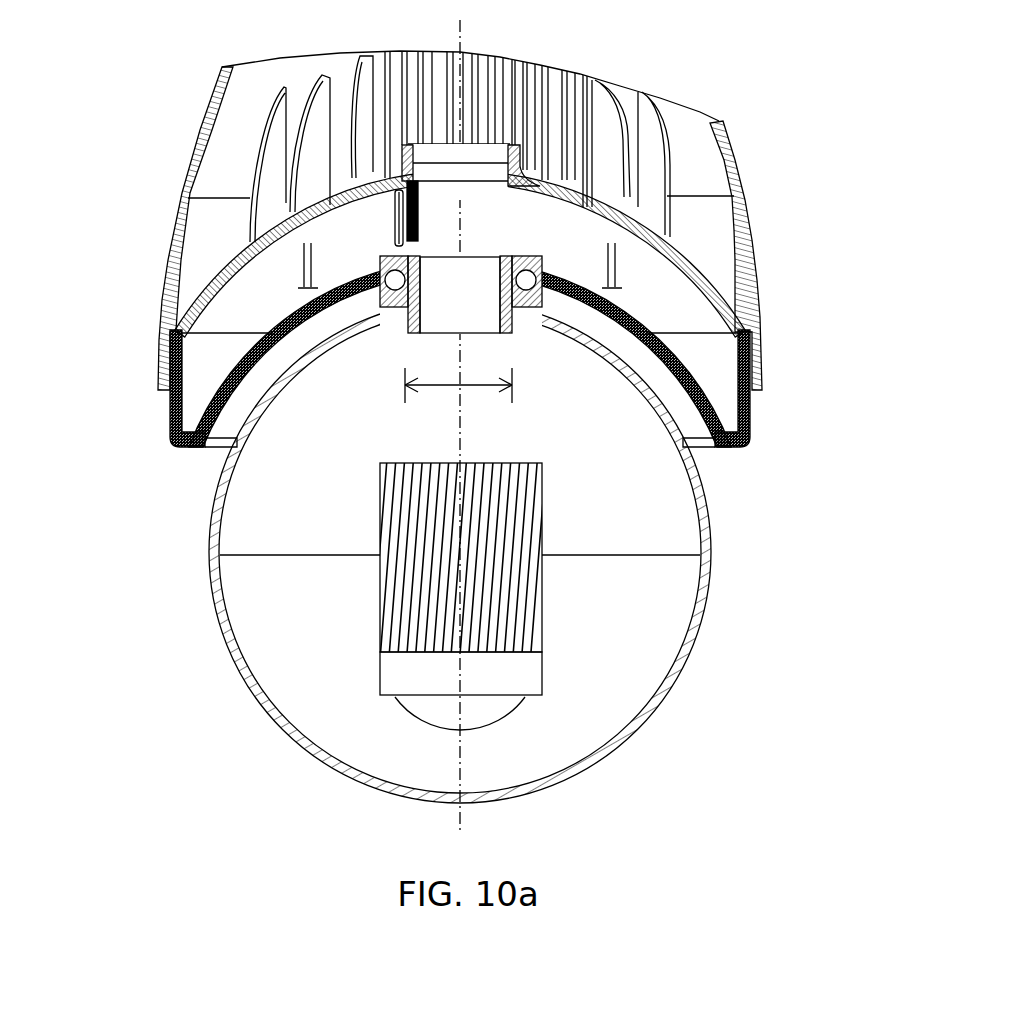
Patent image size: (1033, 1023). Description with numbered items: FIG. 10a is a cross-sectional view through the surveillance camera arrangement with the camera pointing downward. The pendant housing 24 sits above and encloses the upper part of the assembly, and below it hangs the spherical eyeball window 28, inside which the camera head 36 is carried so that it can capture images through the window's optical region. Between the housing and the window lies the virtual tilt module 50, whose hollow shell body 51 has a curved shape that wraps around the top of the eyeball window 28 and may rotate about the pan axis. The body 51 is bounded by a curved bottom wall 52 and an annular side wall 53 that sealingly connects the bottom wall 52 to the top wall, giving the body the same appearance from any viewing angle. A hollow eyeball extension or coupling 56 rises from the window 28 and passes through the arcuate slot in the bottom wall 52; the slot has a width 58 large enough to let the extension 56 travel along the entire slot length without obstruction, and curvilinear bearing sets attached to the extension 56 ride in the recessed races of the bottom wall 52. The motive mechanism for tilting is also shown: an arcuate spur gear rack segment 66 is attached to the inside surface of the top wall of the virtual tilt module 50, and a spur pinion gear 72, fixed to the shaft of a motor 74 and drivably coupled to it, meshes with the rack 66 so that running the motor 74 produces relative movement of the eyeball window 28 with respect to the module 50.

The pendant housing 24 is at (745, 210).
The spherical window 28 is at (643, 720).
The camera head 36 is at (527, 620).
The virtual tilt module 50 is at (455, 404).
The hollow shell body 51 is at (710, 277).
The bottom wall 52 is at (220, 400).
The annular side wall 53 is at (170, 403).
The hollow eyeball extension 56 is at (537, 258).
The width 58 is at (505, 385).
The arcuate spur gear rack segment 66 is at (413, 188).
The spur pinion gear 72 is at (420, 212).
The motor 74 is at (393, 227).